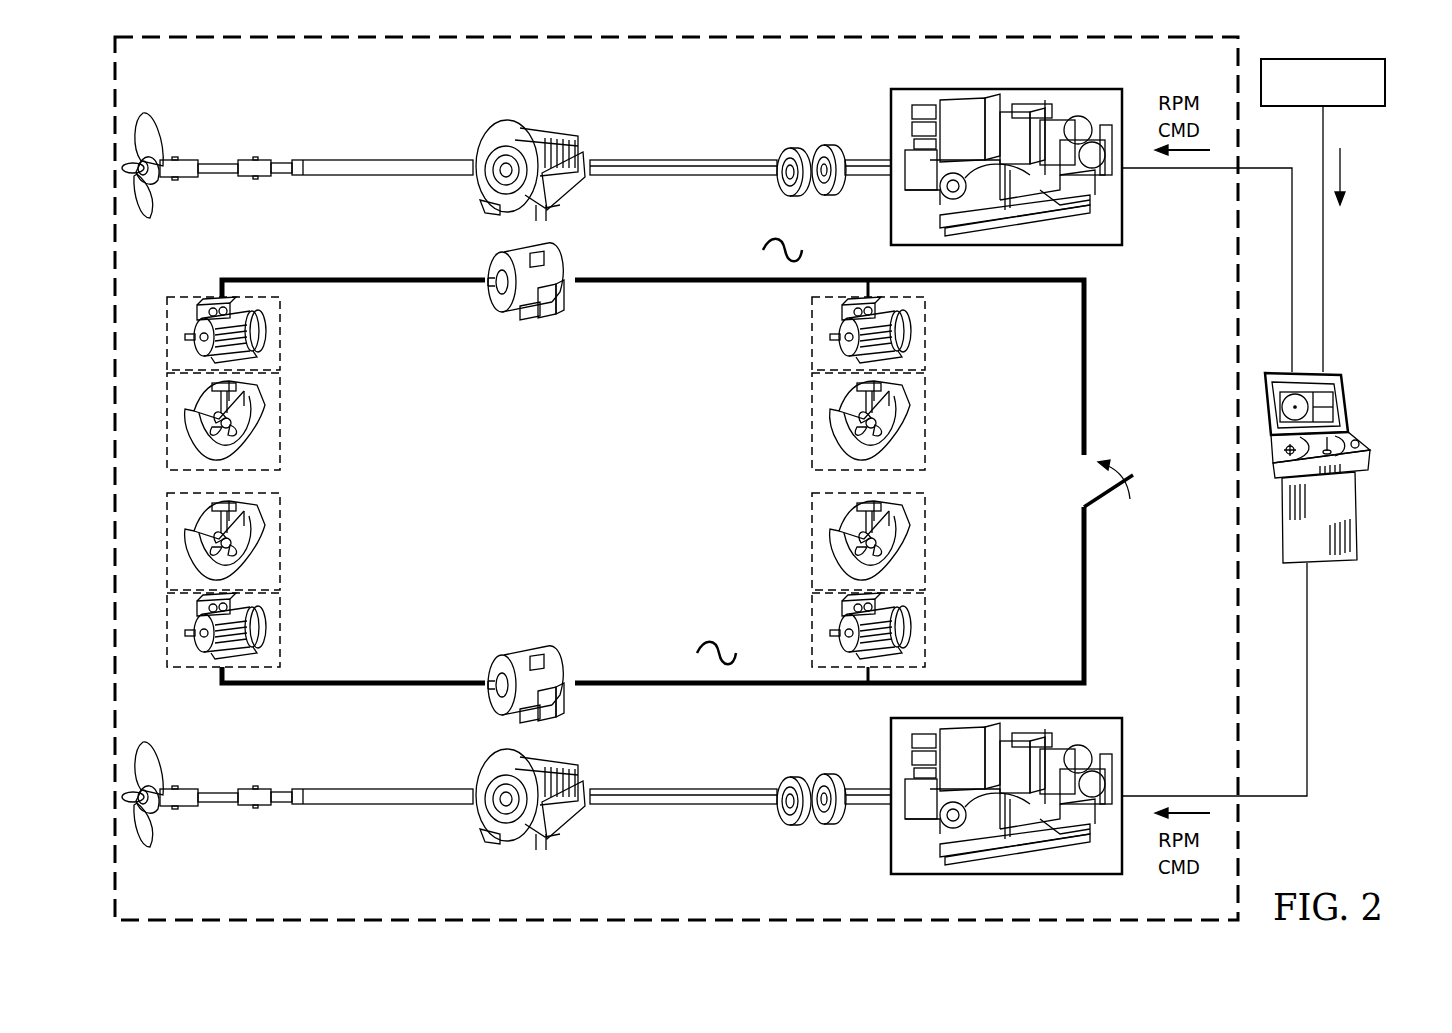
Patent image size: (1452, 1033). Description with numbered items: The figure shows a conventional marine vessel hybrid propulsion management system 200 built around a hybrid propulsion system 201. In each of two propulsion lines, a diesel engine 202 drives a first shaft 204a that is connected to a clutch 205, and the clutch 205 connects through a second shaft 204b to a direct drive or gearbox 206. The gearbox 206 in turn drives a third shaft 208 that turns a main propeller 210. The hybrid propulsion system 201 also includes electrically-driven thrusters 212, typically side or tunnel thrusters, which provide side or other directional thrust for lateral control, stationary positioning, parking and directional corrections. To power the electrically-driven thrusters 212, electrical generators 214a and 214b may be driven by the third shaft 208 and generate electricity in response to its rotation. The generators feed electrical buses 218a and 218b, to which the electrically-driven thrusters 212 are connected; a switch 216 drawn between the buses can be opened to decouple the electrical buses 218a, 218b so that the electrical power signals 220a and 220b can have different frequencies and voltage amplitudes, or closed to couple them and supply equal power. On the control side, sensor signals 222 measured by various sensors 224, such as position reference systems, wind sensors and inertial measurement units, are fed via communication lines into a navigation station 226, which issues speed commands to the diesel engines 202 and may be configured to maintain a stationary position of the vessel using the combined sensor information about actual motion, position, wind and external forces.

The marine vessel hybrid propulsion management system 200 is at (1350, 829).
The hybrid propulsion system 201 is at (192, 905).
The diesel engine 202 is at (1100, 172).
The first shaft 204a is at (862, 160).
The second shaft 204b is at (690, 160).
The clutch 205 is at (794, 148).
The gearbox 206 is at (540, 114).
The third shaft 208 is at (395, 160).
The main propeller 210 is at (158, 121).
The electrically-driven thruster 212 is at (281, 337).
The electrical generator 214a is at (558, 298).
The electrical generator 214b is at (528, 646).
The bus tie switch 216 is at (1140, 525).
The electrical bus 218a is at (636, 278).
The electrical bus 218b is at (645, 681).
The electrical power signal 220a is at (766, 240).
The electrical power signal 220b is at (699, 650).
The sensor signals 222 is at (1417, 221).
The sensors 224 is at (1335, 58).
The navigation station 226 is at (1345, 560).